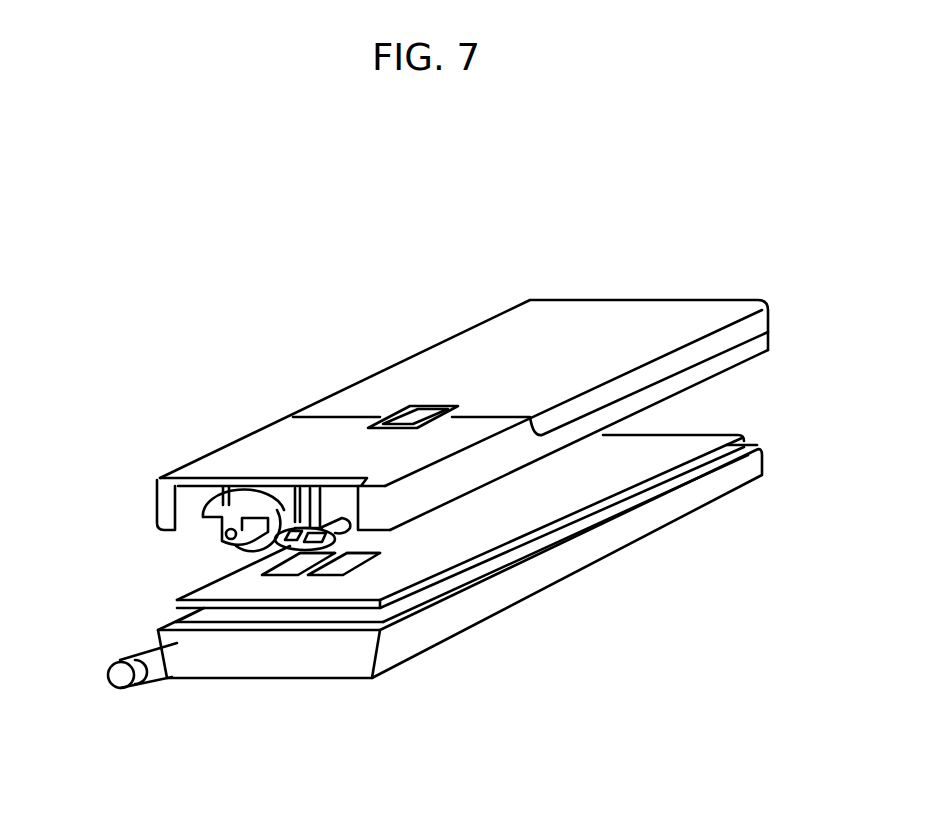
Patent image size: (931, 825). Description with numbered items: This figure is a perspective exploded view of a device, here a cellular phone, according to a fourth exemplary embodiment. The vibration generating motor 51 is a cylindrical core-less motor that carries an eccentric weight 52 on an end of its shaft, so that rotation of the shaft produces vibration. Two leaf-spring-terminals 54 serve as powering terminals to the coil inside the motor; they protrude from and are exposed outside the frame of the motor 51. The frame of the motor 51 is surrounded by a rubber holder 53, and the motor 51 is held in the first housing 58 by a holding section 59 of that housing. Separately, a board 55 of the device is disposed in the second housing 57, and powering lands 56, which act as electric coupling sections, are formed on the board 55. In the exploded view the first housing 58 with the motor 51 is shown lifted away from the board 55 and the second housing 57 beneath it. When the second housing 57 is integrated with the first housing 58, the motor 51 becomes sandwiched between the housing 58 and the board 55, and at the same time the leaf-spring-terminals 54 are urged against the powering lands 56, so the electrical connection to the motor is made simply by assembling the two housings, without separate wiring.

The vibration generating motor 51 is at (232, 537).
The eccentric weight 52 is at (205, 522).
The rubber holder 53 is at (287, 497).
The leaf-spring-terminals 54 is at (335, 545).
The board 55 is at (653, 452).
The powering lands 56 is at (322, 577).
The second housing 57 is at (657, 513).
The first housing 58 is at (560, 340).
The holding section 59 is at (307, 500).